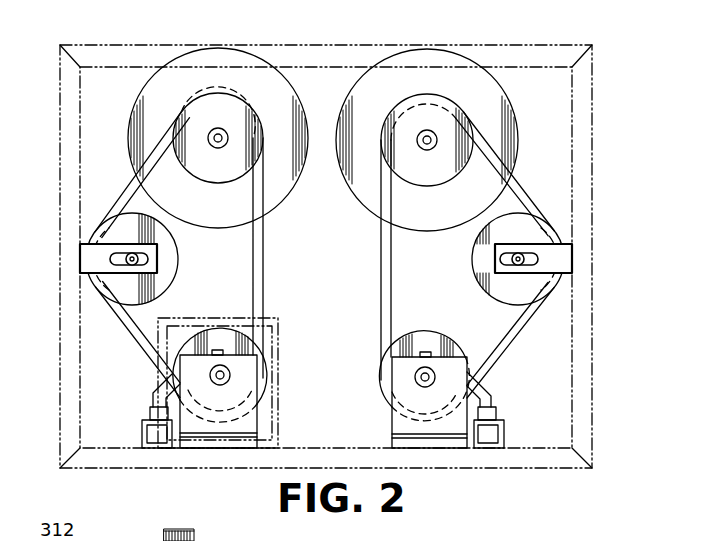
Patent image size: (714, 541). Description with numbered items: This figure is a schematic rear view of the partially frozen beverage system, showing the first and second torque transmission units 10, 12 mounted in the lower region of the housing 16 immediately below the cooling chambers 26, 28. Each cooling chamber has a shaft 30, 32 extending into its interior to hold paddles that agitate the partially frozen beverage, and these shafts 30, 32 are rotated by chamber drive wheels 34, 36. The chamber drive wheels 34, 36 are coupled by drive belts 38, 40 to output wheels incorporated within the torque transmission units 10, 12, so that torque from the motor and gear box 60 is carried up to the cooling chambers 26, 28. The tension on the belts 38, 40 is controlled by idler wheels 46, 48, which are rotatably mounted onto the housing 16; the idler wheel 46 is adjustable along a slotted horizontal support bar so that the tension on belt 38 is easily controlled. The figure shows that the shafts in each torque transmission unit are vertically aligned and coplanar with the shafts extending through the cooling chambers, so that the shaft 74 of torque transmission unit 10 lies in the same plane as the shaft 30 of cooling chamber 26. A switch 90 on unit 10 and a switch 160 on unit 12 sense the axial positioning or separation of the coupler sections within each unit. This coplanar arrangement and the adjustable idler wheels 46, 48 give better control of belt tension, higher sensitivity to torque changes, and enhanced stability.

The first torque transmission unit 10 is at (188, 336).
The second torque transmission unit 12 is at (424, 335).
The housing 16 is at (593, 308).
The cooling chamber 26 is at (140, 90).
The cooling chamber 28 is at (365, 73).
The shaft 30 is at (219, 149).
The shaft 32 is at (434, 148).
The chamber drive wheel 34 is at (235, 96).
The chamber drive wheel 36 is at (438, 97).
The drive belt 38 is at (264, 233).
The drive belt 40 is at (382, 233).
The idler wheel 46 is at (177, 252).
The idler wheel 48 is at (472, 258).
The motor and gear box 60 is at (280, 327).
The shaft 74 is at (230, 374).
The switch 90 is at (144, 430).
The switch 160 is at (503, 420).